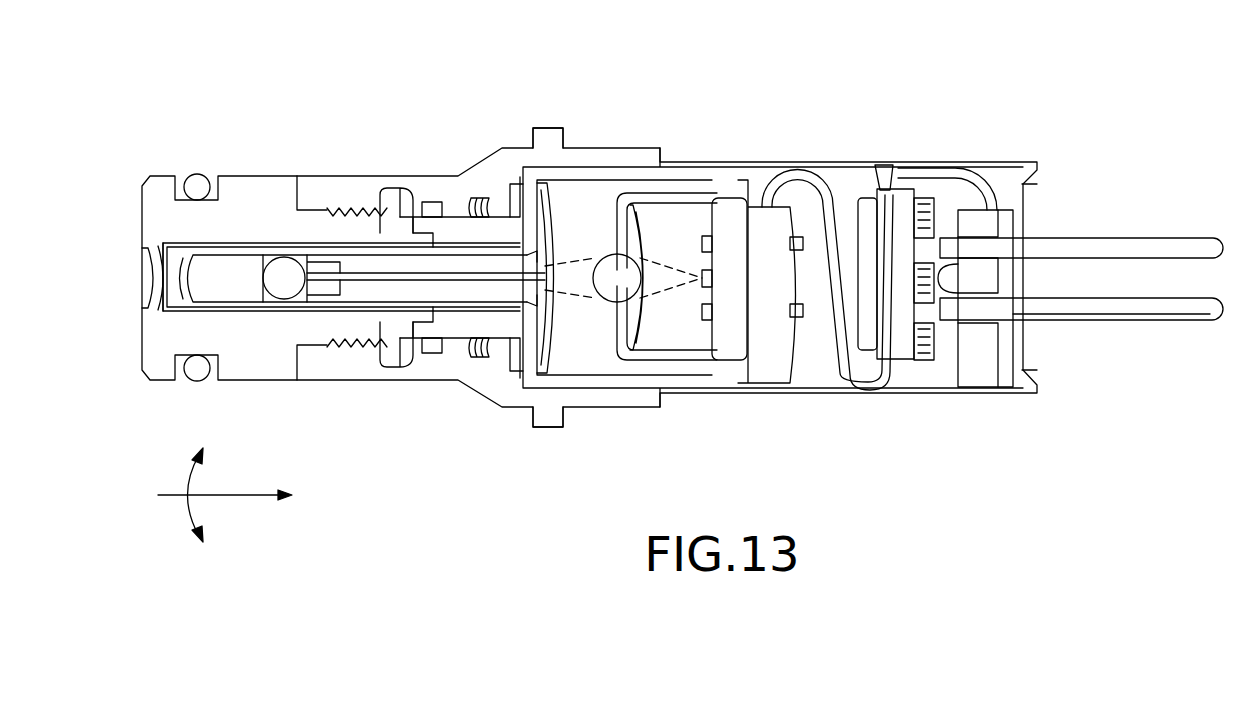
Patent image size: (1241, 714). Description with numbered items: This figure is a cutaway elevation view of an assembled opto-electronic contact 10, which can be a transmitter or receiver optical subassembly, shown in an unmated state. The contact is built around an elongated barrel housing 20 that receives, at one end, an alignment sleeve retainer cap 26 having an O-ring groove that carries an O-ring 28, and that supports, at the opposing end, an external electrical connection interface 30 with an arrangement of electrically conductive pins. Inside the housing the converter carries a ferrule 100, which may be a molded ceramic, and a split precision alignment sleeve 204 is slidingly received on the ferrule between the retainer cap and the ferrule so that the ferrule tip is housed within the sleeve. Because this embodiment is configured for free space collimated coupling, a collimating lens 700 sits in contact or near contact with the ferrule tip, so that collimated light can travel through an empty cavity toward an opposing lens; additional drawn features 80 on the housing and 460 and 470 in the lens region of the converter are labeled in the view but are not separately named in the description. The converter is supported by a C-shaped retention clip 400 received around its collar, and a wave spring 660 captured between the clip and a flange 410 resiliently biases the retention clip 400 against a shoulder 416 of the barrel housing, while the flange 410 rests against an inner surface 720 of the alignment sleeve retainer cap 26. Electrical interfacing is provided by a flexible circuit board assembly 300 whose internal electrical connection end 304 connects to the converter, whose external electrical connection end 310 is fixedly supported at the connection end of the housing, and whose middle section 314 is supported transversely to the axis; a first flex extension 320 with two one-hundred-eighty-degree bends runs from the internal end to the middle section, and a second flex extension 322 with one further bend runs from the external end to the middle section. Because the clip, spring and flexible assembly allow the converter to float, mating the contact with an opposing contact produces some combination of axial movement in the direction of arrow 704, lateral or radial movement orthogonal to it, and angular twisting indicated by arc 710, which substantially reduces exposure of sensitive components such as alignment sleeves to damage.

The opto-electronic contact 10 is at (774, 104).
The barrel housing 20 is at (640, 148).
The alignment sleeve retainer cap 26 is at (262, 176).
The O-ring 28 is at (202, 172).
The external electrical connection interface 30 is at (1136, 230).
The key 80 is at (563, 128).
The ferrule 100 is at (323, 295).
The precision alignment sleeve 204 is at (207, 310).
The flexible circuit board assembly 300 is at (1225, 417).
The internal electrical connection end 304 is at (795, 382).
The external electrical connection end 310 is at (1010, 368).
The middle section 314 is at (913, 380).
The first flex extension 320 is at (835, 178).
The second flex extension 322 is at (985, 178).
The retention clip 400 is at (462, 200).
The flange 410 is at (408, 360).
The shoulder 416 is at (480, 195).
The lens holder 460 is at (702, 287).
The ball lens 470 is at (605, 305).
The wave spring 660 is at (430, 205).
The collimating lens 700 is at (264, 280).
The arrow 704 is at (237, 497).
The arc 710 is at (188, 508).
The inner surface 720 is at (400, 215).